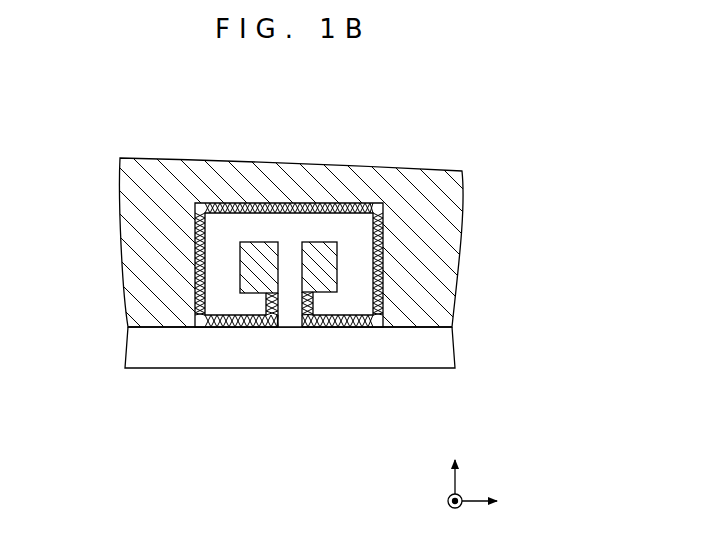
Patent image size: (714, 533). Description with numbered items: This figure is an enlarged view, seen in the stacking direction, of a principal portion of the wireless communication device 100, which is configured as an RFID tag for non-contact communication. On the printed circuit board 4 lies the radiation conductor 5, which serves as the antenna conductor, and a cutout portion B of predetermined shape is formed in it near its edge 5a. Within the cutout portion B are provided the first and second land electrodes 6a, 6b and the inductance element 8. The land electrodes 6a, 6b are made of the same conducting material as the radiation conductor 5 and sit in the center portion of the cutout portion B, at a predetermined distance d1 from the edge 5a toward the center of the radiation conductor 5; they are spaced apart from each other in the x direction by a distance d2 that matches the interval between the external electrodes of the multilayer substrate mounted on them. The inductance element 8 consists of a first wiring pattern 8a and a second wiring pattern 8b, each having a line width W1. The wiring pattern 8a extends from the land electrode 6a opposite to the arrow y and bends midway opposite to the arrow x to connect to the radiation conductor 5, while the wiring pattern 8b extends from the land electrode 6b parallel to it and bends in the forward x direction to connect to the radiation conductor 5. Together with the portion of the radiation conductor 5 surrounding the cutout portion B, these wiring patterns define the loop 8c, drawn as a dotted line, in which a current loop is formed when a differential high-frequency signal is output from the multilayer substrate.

The wireless communication device 100 is at (112, 130).
The radiation conductor 5 is at (463, 232).
The printed circuit board 4 is at (454, 342).
The edge of the radiation conductor 5a is at (407, 327).
The inductance element 8 is at (272, 331).
The first wiring pattern 8a is at (229, 327).
The second wiring pattern 8b is at (315, 327).
The loop 8c is at (185, 290).
The first land electrode 6a is at (259, 242).
The second land electrode 6b is at (321, 242).
The cutout portion B is at (352, 228).
The distance d1 is at (340, 293).
The distance d2 is at (302, 327).
The line width W1 is at (341, 329).